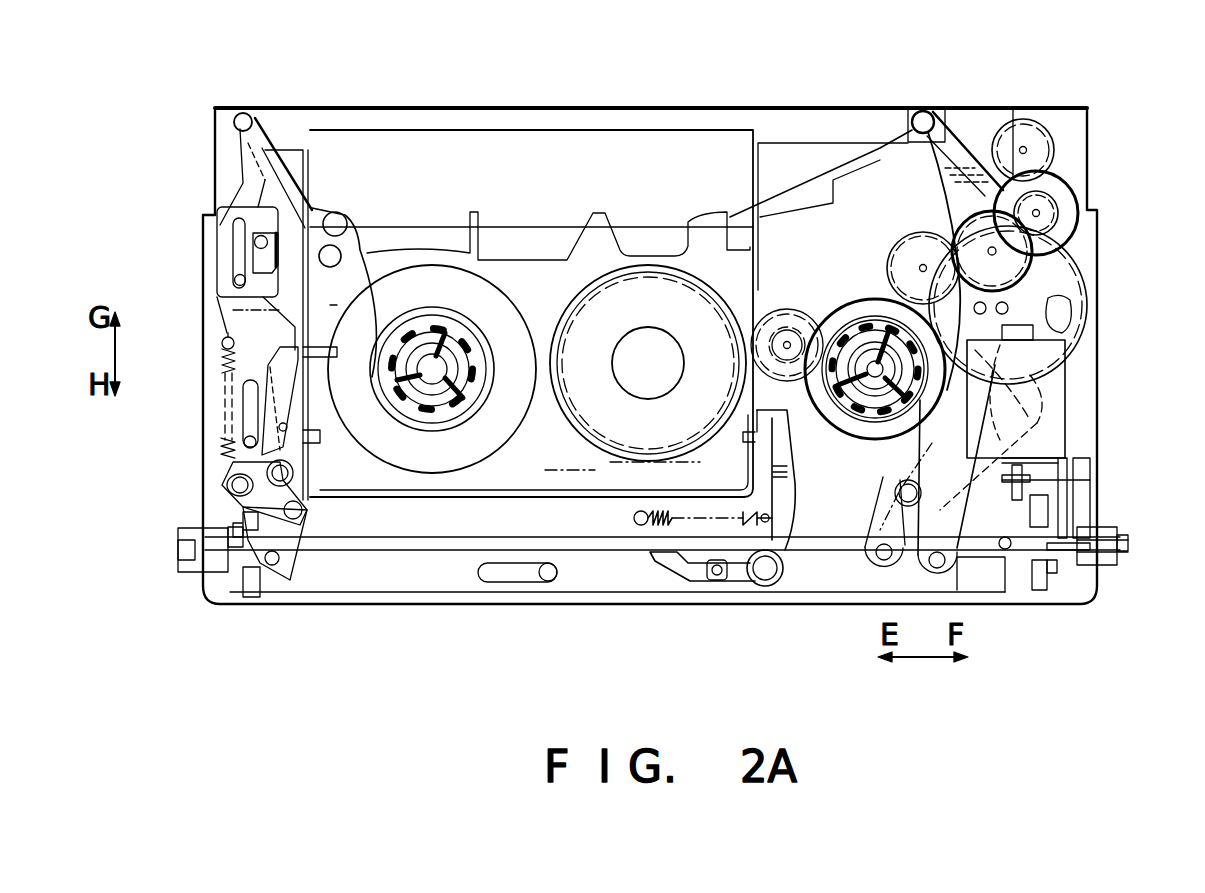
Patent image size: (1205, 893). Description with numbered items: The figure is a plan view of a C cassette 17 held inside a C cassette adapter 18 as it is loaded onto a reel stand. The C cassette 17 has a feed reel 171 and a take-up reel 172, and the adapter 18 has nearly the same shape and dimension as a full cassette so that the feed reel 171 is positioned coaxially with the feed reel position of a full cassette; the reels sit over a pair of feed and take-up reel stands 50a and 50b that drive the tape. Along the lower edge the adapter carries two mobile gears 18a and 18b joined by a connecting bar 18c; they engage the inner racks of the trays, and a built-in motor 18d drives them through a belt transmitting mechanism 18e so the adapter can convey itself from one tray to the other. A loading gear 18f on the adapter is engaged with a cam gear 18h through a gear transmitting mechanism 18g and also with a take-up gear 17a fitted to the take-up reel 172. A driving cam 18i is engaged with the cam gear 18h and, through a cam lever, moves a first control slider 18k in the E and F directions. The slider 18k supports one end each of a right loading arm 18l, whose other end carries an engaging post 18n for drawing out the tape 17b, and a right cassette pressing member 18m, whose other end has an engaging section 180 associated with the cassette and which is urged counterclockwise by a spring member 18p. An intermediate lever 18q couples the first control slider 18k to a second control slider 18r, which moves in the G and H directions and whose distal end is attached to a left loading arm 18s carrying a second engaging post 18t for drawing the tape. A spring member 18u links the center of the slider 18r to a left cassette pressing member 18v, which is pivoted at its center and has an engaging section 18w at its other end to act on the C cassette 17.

The C cassette adapter 18 is at (1100, 240).
The C cassette 17 is at (705, 128).
The take-up gear 17a is at (733, 298).
The tape 17b is at (767, 112).
The feed reel 171 is at (446, 342).
The take-up reel 172 is at (648, 335).
The feed reel stand 50a is at (428, 342).
The take-up reel stand 50b is at (868, 362).
The mobile gear 18a is at (195, 575).
The mobile gear 18b is at (1118, 530).
The connecting bar 18c is at (444, 560).
The built-in motor 18d is at (1065, 405).
The belt transmitting mechanism 18e is at (1098, 490).
The loading gear 18f is at (1004, 128).
The gear transmitting mechanism 18g is at (908, 242).
The cam gear 18h is at (1085, 320).
The driving cam 18i is at (1060, 297).
The first control slider 18k is at (793, 592).
The right loading arm 18l is at (1040, 422).
The right cassette pressing member 18m is at (805, 503).
The engaging post 18n is at (930, 110).
The spring member 18p is at (647, 535).
The intermediate lever 18q is at (305, 515).
The second control slider 18r is at (233, 310).
The left loading arm 18s is at (245, 185).
The engaging post 18t is at (252, 116).
The spring member 18u is at (223, 367).
The left cassette pressing member 18v is at (230, 462).
The engaging section 18w is at (352, 250).
The engaging section 180 is at (740, 437).